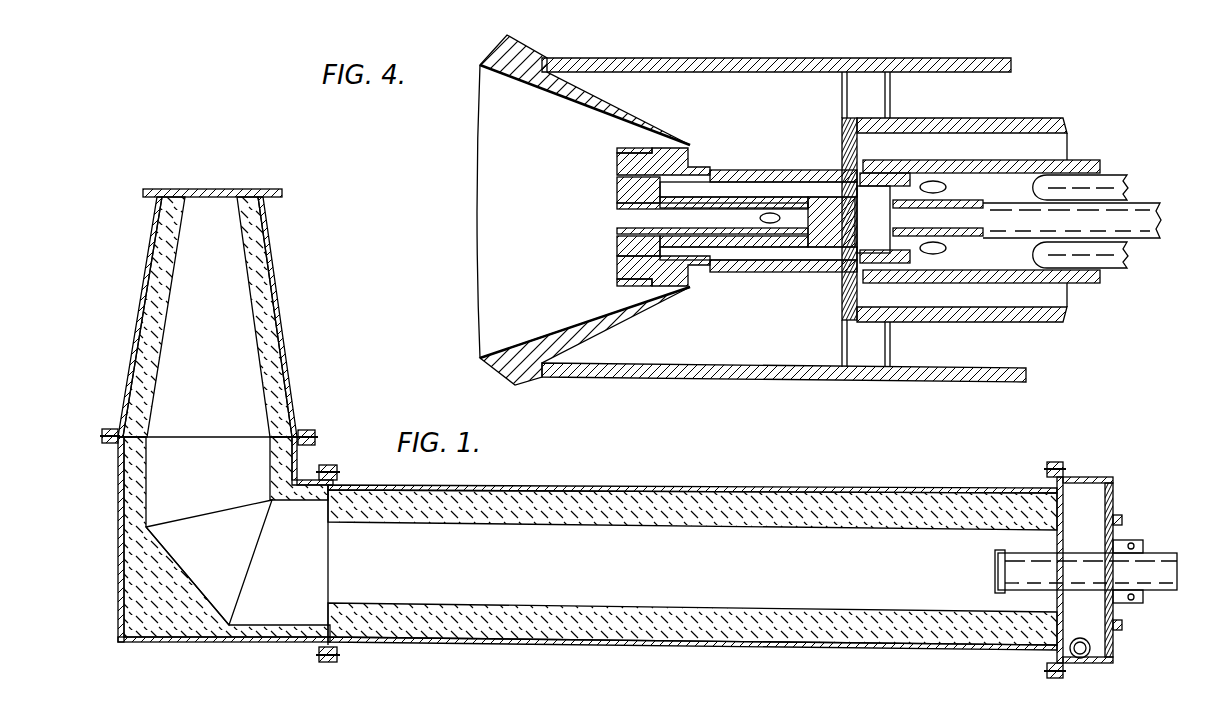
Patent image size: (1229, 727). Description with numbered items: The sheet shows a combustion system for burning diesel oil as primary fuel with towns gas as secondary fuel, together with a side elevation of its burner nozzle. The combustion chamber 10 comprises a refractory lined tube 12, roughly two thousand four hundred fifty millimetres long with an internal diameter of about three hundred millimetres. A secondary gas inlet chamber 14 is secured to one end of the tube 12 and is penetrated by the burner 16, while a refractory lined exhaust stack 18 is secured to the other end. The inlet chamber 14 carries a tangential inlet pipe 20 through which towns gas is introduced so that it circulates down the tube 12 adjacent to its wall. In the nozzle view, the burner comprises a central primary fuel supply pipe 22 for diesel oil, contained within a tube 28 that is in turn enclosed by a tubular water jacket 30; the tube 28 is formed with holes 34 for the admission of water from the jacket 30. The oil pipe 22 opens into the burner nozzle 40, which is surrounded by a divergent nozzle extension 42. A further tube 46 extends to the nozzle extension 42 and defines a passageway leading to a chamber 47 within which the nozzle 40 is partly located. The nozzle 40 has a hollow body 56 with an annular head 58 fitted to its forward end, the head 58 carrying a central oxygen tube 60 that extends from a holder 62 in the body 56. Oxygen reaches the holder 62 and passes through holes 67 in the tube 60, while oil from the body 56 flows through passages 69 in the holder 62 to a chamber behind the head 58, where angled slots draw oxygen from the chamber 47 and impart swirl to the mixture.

In FIG. 1, the combustion chamber 10 is at (617, 478).
In FIG. 1, the refractory lined tube 12 is at (712, 500).
In FIG. 1, the secondary gas inlet chamber 14 is at (1107, 481).
In FIG. 1, the burner 16 is at (990, 552).
In FIG. 1, the refractory lined exhaust stack 18 is at (308, 384).
In FIG. 1, the tangential inlet pipe 20 is at (1090, 648).
In FIG. 4, the central primary fuel supply pipe 22 is at (1143, 225).
In FIG. 4, the tube 28 is at (1086, 170).
In FIG. 4, the tubular water jacket 30 is at (1053, 120).
In FIG. 4, the holes 34 is at (933, 180).
In FIG. 4, the burner nozzle 40 is at (580, 165).
In FIG. 4, the divergent nozzle extension 42 is at (572, 103).
In FIG. 4, the further tube 46 is at (963, 68).
In FIG. 4, the chamber 47 is at (707, 95).
In FIG. 4, the hollow body 56 is at (825, 273).
In FIG. 4, the annular head 58 is at (691, 158).
In FIG. 4, the central oxygen tube 60 is at (620, 205).
In FIG. 4, the holder 62 is at (823, 170).
In FIG. 4, the holes 67 is at (768, 252).
In FIG. 4, the passages 69 is at (805, 254).